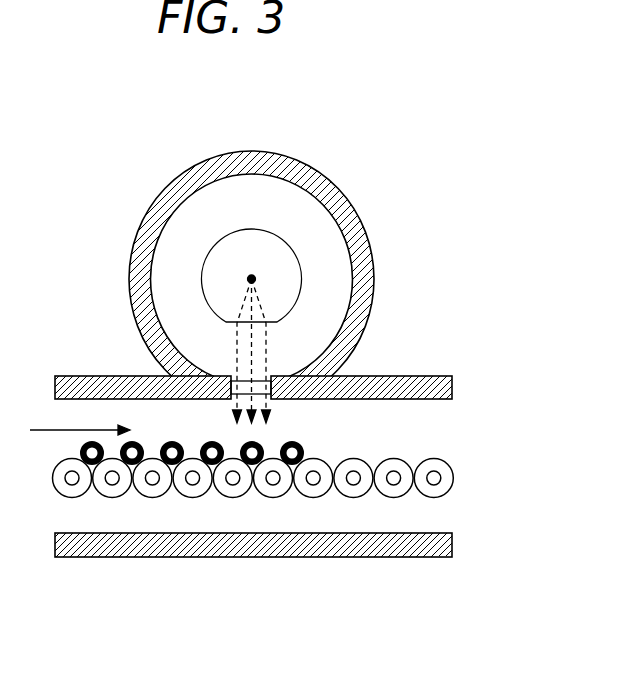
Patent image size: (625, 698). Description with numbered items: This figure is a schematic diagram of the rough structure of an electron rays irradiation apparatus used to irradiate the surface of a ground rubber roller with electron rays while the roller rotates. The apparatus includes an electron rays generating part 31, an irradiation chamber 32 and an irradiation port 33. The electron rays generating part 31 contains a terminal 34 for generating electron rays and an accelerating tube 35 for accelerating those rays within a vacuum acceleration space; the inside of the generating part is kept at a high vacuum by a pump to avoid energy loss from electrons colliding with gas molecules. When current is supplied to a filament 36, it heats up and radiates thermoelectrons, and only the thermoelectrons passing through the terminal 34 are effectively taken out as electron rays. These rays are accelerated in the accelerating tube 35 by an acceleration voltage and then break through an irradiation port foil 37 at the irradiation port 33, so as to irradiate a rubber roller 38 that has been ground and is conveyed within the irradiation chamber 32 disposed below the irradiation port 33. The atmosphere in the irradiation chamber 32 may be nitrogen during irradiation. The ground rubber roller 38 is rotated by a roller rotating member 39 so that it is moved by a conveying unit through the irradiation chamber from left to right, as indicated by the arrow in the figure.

The electron rays generating part 31 is at (298, 207).
The irradiation chamber 32 is at (367, 515).
The irradiation port 33 is at (271, 394).
The terminal 34 is at (302, 275).
The accelerating tube 35 is at (150, 215).
The filament 36 is at (252, 279).
The irradiation port foil 37 is at (233, 381).
The rubber roller 38 is at (213, 457).
The roller rotating member 39 is at (152, 477).